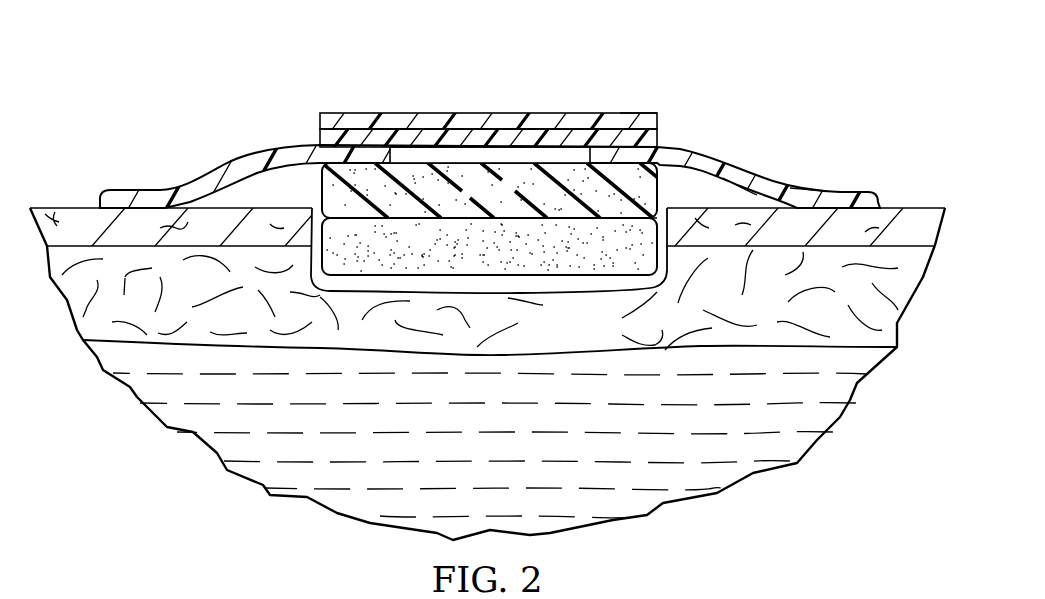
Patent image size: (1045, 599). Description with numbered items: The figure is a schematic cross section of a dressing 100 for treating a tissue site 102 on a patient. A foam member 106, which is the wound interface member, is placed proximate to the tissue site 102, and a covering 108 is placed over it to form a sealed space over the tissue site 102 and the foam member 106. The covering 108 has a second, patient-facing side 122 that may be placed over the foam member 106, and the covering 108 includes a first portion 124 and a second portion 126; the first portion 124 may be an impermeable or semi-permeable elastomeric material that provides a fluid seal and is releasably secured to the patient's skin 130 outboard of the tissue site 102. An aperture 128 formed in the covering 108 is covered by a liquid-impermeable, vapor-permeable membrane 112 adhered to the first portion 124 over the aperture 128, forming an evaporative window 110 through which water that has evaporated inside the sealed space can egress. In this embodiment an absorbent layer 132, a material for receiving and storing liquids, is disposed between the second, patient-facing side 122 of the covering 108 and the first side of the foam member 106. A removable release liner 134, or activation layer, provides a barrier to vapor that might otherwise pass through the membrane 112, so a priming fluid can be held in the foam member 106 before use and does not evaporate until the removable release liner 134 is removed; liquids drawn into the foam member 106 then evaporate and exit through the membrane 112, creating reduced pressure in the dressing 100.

The dressing 100 is at (262, 57).
The tissue site 102 is at (603, 290).
The foam member 106 is at (506, 258).
The covering 108 is at (706, 147).
The evaporative window 110 is at (397, 120).
The liquid-impermeable, vapor-permeable membrane 112 is at (352, 120).
The second, patient-facing side 122 is at (756, 191).
The first portion 124 is at (807, 188).
The second portion 126 is at (510, 128).
The aperture 128 is at (565, 150).
The patient's skin 130 is at (906, 208).
The absorbent layer 132 is at (467, 202).
The removable release liner 134 is at (635, 122).